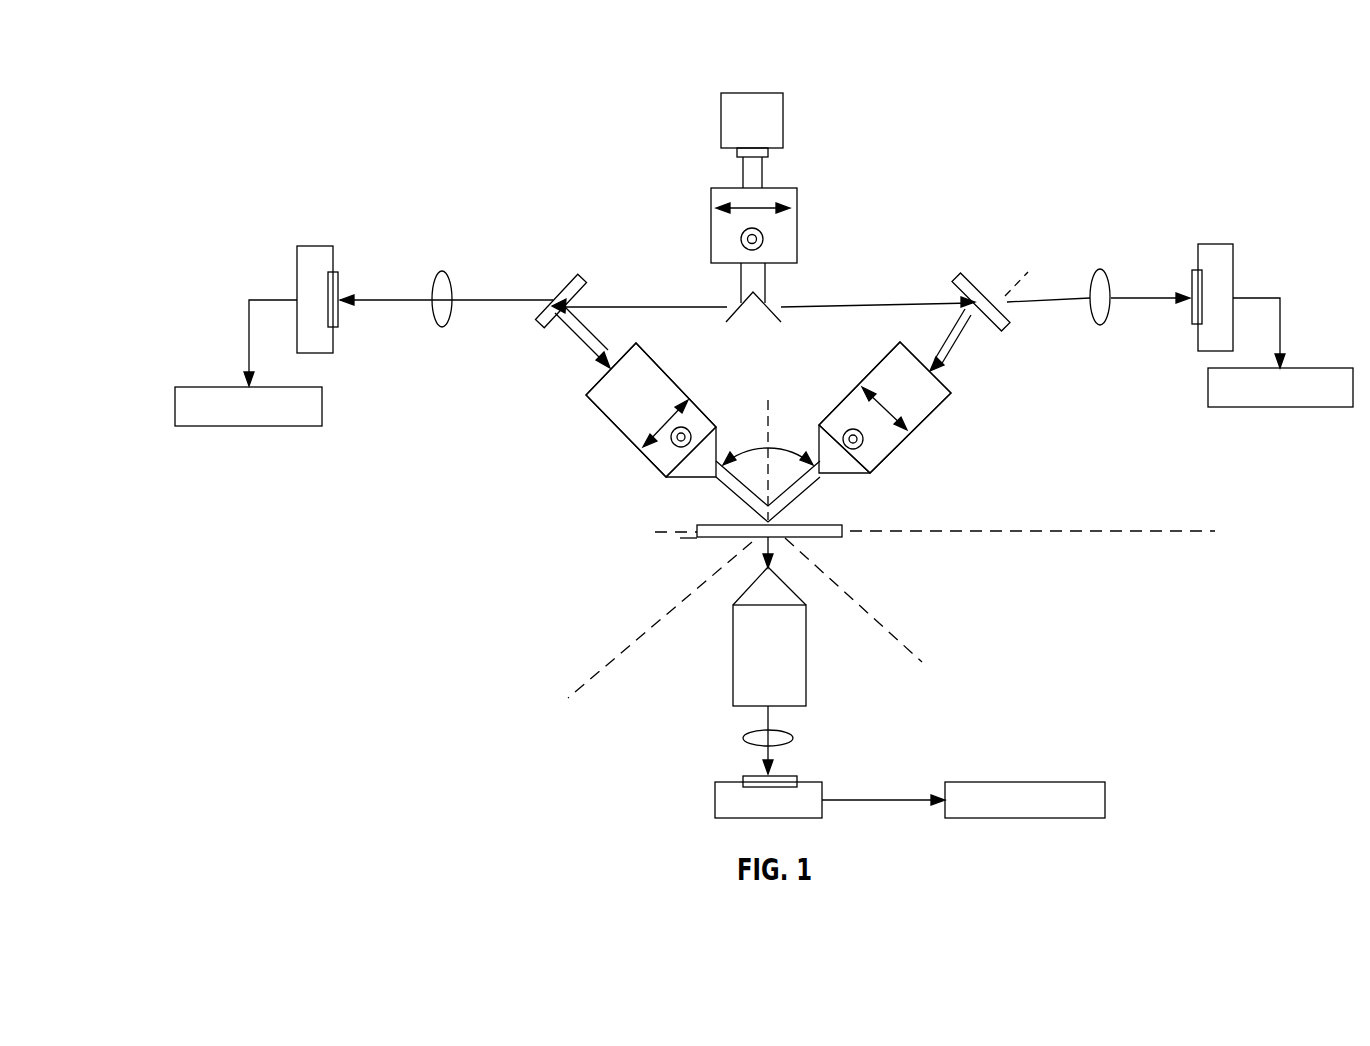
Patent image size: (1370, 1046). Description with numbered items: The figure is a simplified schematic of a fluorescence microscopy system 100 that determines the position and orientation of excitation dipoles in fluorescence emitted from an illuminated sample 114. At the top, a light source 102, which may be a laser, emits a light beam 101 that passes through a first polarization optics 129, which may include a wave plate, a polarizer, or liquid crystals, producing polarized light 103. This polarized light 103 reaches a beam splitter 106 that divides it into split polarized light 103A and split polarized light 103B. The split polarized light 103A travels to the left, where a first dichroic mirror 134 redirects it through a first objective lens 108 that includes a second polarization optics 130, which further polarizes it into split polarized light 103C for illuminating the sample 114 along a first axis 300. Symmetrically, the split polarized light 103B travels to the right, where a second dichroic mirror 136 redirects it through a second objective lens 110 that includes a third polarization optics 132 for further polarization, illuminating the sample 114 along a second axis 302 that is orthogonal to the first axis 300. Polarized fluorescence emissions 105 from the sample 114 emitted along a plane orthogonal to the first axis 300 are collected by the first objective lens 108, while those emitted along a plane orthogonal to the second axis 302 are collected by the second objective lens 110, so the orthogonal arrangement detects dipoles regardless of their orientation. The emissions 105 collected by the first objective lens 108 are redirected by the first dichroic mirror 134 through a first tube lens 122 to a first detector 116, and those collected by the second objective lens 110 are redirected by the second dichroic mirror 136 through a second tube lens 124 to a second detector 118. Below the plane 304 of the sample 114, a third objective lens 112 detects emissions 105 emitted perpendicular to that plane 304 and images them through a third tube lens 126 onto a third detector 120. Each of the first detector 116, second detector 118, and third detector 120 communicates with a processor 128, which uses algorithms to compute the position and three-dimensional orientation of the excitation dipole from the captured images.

The fluorescence microscopy system 100 is at (276, 158).
The light beam 101 is at (752, 177).
The light source 102 is at (783, 120).
The polarized light 103 is at (748, 282).
The split polarized light 103A is at (670, 308).
The split polarized light 103B is at (907, 305).
The split polarized light 103C is at (723, 487).
The polarized fluorescence emissions 105 is at (1175, 262).
The beam splitter 106 is at (768, 303).
The first objective lens 108 is at (621, 437).
The second objective lens 110 is at (948, 395).
The third objective lens 112 is at (806, 682).
The sample 114 is at (840, 563).
The first detector 116 is at (328, 246).
The second detector 118 is at (1213, 244).
The third detector 120 is at (822, 798).
The first tube lens 122 is at (442, 327).
The second tube lens 124 is at (1100, 326).
The third tube lens 126 is at (745, 740).
The processor 128 is at (260, 427).
The first polarization optics 129 is at (797, 232).
The second polarization optics 130 is at (650, 472).
The third polarization optics 132 is at (927, 413).
The first dichroic mirror 134 is at (545, 330).
The second dichroic mirror 136 is at (1037, 288).
The first axis 300 is at (899, 638).
The second axis 302 is at (568, 700).
The plane 304 is at (1070, 532).